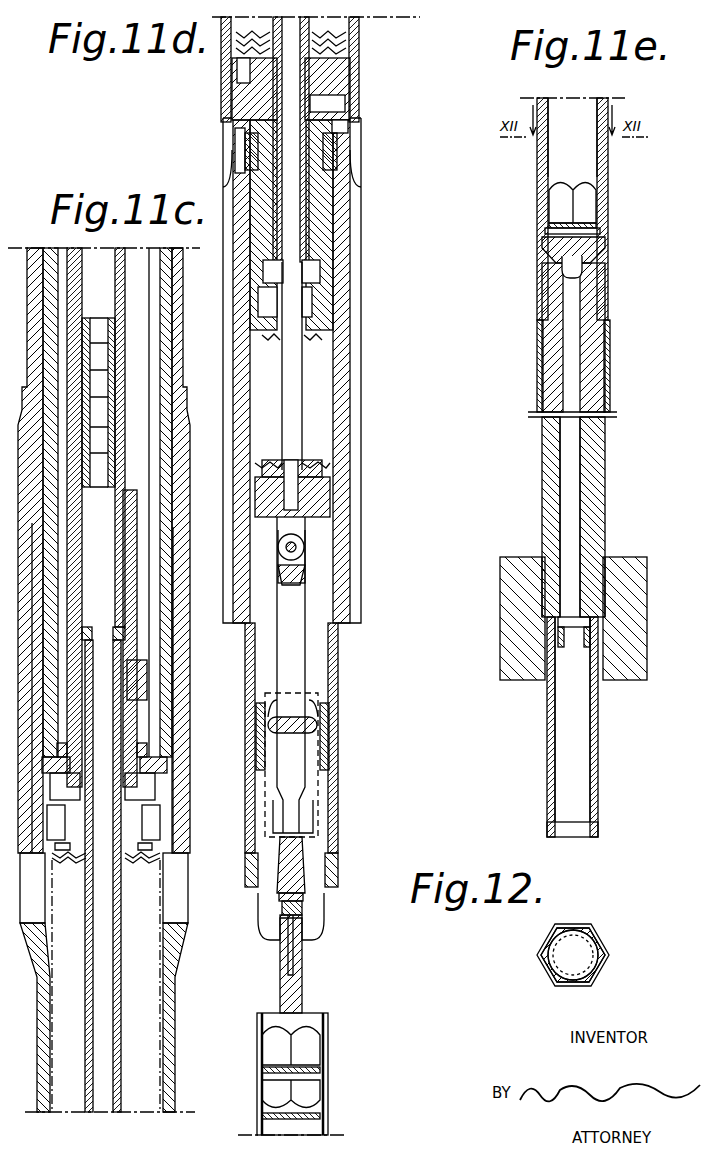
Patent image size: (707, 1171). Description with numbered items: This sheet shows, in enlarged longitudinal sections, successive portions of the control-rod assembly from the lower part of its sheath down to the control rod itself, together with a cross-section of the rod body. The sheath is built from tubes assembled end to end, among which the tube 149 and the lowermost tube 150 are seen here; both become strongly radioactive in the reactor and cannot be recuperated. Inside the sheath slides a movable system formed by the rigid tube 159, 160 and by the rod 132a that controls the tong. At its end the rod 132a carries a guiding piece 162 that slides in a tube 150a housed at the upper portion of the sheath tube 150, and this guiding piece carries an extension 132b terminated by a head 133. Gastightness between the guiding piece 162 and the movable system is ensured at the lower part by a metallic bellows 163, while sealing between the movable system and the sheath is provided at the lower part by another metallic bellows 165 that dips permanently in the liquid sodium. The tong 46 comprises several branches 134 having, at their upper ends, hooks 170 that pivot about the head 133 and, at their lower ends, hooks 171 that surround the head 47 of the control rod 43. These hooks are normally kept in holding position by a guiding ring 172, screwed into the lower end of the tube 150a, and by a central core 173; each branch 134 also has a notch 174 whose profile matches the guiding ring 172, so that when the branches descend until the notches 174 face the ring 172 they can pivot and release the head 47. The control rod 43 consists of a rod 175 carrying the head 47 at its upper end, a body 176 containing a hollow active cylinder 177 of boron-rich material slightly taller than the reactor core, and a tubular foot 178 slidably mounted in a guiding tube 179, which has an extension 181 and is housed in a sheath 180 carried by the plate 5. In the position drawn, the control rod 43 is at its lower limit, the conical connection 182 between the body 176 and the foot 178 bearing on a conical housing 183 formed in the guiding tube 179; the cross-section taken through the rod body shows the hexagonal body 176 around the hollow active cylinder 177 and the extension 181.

In FIG. 11C, the tube 149 is at (48, 264).
In FIG. 11C, the rod 132a is at (97, 277).
In FIG. 11D, the rod 132a is at (295, 427).
In FIG. 11C, the rigid tube 159 is at (128, 268).
In FIG. 11C, the rigid tube 160 is at (118, 982).
In FIG. 11D, the rigid tube 160 is at (312, 24).
In FIG. 11C, the metallic bellows 165 is at (145, 1020).
In FIG. 11D, the metallic bellows 165 is at (340, 40).
In FIG. 11D, the tube 150 is at (350, 98).
In FIG. 11D, the metallic bellows 163 is at (320, 457).
In FIG. 11D, the guiding piece 162 is at (330, 505).
In FIG. 11D, the tube 150a is at (335, 548).
In FIG. 11D, the extension 132b is at (295, 635).
In FIG. 11D, the hooks 170 is at (315, 705).
In FIG. 11D, the head 133 is at (317, 725).
In FIG. 11D, the branches 134 is at (320, 750).
In FIG. 11D, the notch 174 is at (322, 772).
In FIG. 11D, the tong 46 is at (318, 840).
In FIG. 11D, the guiding ring 172 is at (338, 862).
In FIG. 11D, the central core 173 is at (303, 890).
In FIG. 11D, the head 47 is at (302, 912).
In FIG. 11D, the hooks 171 is at (318, 938).
In FIG. 11D, the rod 175 is at (302, 970).
In FIG. 11D, the control rod 43 is at (328, 1036).
In FIG. 11E, the control rod 43 is at (610, 160).
In FIG. 12, the control rod 43 is at (590, 928).
In FIG. 11D, the extension 181 is at (320, 1071).
In FIG. 11E, the extension 181 is at (600, 225).
In FIG. 12, the extension 181 is at (543, 955).
In FIG. 11D, the body 176 is at (290, 1130).
In FIG. 11E, the body 176 is at (597, 199).
In FIG. 12, the body 176 is at (612, 955).
In FIG. 11E, the hollow active cylinder 177 is at (588, 134).
In FIG. 12, the hollow active cylinder 177 is at (553, 968).
In FIG. 11E, the conical connection 182 is at (565, 240).
In FIG. 11E, the conical housing 183 is at (598, 277).
In FIG. 11E, the tubular foot 178 is at (592, 338).
In FIG. 11E, the guiding tube 179 is at (592, 464).
In FIG. 11E, the sheath 180 is at (600, 532).
In FIG. 11E, the plate 5 is at (638, 618).